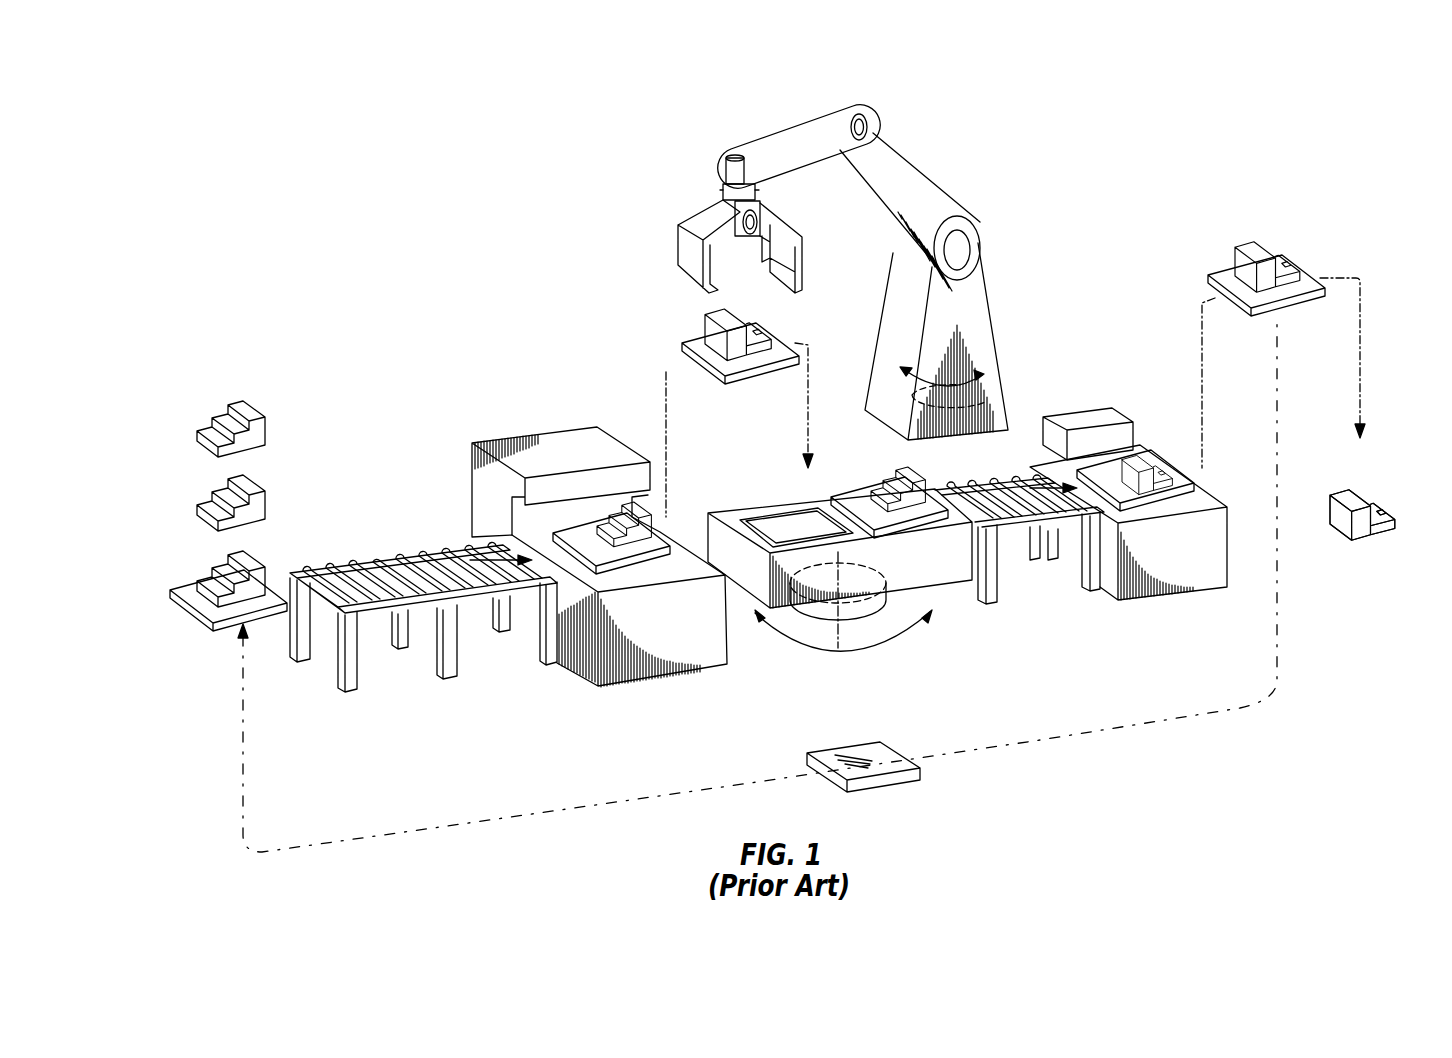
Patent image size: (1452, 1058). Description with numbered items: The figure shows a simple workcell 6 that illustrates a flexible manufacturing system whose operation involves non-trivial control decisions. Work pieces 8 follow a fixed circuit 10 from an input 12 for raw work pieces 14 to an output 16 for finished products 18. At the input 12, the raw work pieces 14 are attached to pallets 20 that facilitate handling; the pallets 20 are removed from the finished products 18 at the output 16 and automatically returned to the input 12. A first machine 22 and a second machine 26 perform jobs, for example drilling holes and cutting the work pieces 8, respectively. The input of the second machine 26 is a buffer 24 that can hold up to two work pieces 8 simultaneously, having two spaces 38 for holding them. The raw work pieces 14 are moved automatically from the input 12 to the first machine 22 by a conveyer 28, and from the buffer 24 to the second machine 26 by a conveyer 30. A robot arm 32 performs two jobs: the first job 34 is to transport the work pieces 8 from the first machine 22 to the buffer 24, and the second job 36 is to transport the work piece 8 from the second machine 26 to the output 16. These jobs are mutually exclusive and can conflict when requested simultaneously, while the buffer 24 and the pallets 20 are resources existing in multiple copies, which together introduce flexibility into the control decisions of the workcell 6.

The workcell 6 is at (470, 417).
The work pieces 8 is at (742, 333).
The fixed circuit 10 is at (400, 560).
The input 12 is at (210, 628).
The raw work pieces 14 is at (240, 410).
The output 16 is at (1380, 485).
The finished products 18 is at (1277, 258).
The pallets 20 is at (737, 378).
The first machine 22 is at (593, 653).
The buffer 24 is at (932, 573).
The second machine 26 is at (1178, 568).
The conveyer 28 is at (433, 603).
The conveyer 30 is at (1007, 525).
The robot arm 32 is at (793, 122).
The first job 34 is at (663, 370).
The second job 36 is at (1202, 308).
The spaces 38 is at (787, 528).